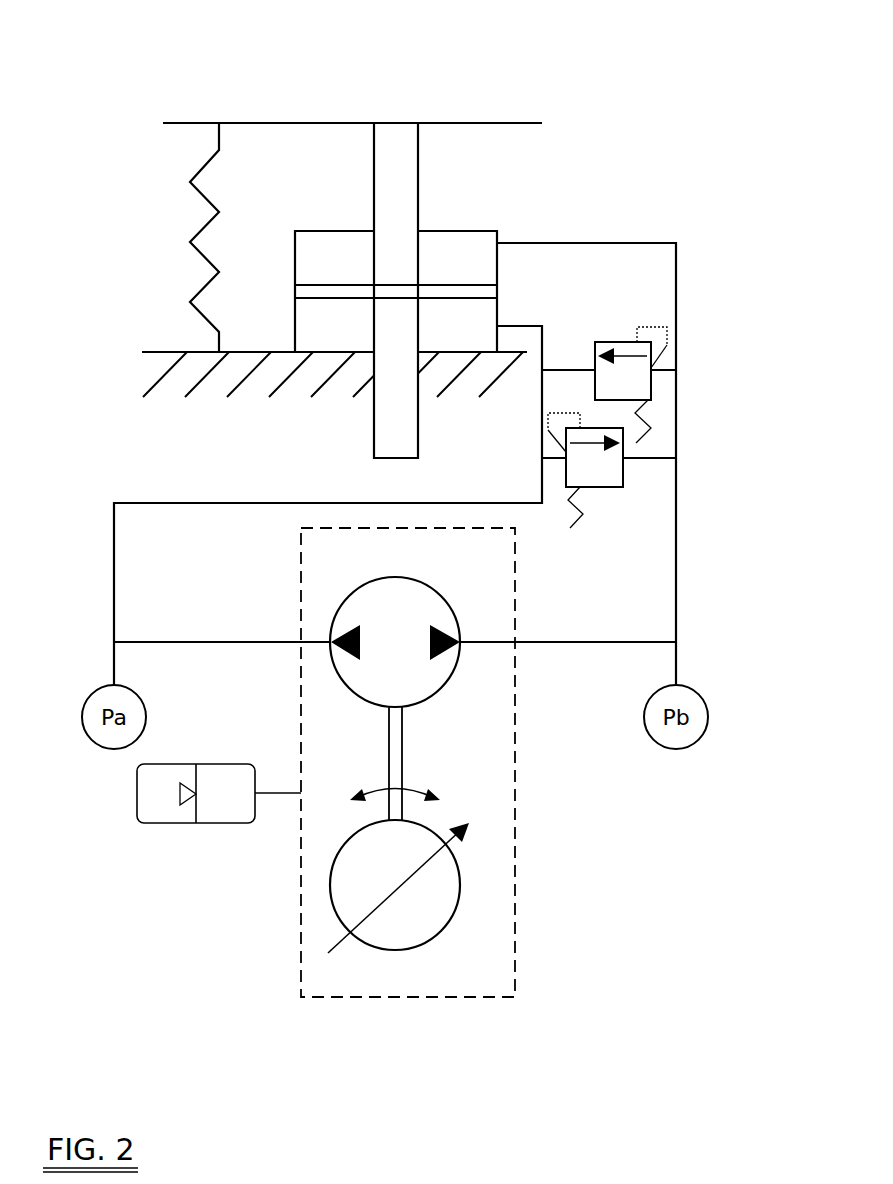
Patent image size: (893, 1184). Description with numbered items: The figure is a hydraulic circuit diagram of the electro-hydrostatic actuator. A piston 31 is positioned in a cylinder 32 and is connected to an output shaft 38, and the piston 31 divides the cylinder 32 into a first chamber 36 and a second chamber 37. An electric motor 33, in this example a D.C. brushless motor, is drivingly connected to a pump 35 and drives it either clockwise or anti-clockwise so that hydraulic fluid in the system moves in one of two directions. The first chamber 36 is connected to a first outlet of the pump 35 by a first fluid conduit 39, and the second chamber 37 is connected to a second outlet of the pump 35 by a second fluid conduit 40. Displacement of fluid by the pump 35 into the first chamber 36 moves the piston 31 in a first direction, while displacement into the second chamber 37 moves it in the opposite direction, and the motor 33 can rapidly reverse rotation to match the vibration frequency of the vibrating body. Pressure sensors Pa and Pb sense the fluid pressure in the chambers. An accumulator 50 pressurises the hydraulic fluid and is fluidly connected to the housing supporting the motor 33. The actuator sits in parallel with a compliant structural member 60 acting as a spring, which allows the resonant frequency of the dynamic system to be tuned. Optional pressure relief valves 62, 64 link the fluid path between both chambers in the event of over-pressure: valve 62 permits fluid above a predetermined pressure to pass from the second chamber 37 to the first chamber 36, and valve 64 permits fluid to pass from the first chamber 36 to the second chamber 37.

The piston 31 is at (470, 291).
The cylinder 32 is at (457, 229).
The electric motor 33 is at (453, 923).
The pump 35 is at (458, 618).
The first chamber 36 is at (312, 333).
The second chamber 37 is at (327, 253).
The output shaft 38 is at (401, 137).
The first fluid conduit 39 is at (158, 502).
The second fluid conduit 40 is at (676, 588).
The accumulator 50 is at (171, 823).
The compliant structural member 60 is at (197, 200).
The pressure relief valve 62 is at (623, 340).
The pressure relief valve 64 is at (611, 487).